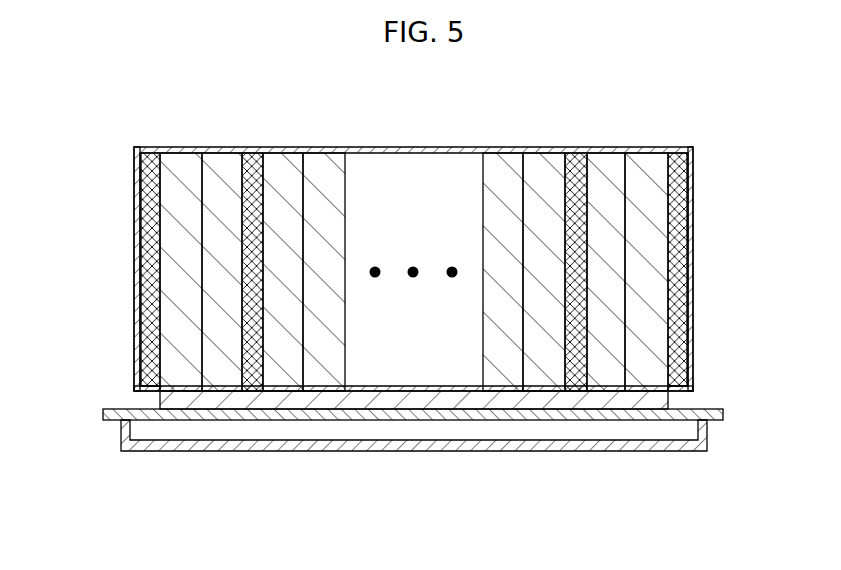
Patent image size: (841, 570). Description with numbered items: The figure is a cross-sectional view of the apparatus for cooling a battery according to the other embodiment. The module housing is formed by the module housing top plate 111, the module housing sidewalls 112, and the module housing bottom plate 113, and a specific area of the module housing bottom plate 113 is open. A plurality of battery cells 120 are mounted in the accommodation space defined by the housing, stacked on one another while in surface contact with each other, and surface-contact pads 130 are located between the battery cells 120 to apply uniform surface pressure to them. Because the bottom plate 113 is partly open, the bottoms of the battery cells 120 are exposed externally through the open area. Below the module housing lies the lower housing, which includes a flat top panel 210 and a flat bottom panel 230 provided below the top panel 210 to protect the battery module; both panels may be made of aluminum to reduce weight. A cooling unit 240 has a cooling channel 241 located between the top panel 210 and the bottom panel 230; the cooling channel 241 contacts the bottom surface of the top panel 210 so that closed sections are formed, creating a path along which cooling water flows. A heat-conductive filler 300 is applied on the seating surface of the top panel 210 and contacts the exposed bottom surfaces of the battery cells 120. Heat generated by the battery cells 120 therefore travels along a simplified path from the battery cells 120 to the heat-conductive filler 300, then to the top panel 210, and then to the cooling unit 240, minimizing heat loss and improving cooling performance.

The module housing top plate 111 is at (603, 150).
The module housing sidewalls 112 is at (134, 198).
The module housing bottom plate 113 is at (152, 405).
The battery cells 120 is at (175, 173).
The surface-contact pads 130 is at (252, 165).
The top panel 210 is at (723, 418).
The bottom panel 230 is at (414, 484).
The cooling unit 240 is at (414, 484).
The cooling channel 241 is at (510, 438).
The heat-conductive filler 300 is at (240, 400).